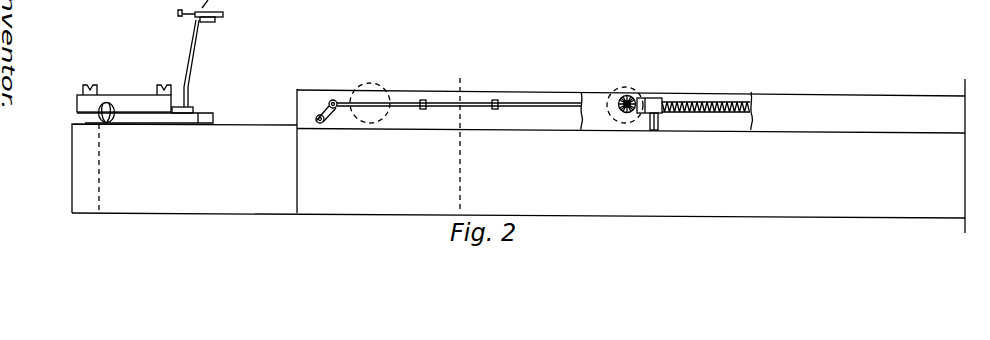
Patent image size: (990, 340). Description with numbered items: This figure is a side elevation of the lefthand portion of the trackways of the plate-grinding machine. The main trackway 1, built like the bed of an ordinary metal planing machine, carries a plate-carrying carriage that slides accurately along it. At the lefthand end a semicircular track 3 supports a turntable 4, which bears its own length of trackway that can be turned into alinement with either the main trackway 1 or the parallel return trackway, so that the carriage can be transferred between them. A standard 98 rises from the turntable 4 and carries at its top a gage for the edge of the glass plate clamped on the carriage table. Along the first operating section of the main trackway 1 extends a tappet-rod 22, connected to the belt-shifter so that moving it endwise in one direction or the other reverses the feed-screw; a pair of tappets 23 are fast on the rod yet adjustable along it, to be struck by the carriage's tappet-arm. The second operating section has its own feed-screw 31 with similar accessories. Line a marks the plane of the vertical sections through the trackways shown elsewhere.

The main trackway 1 is at (390, 202).
The semicircular track 3 is at (227, 125).
The turntable 4 is at (105, 97).
The standard 98 is at (190, 70).
The tappet-rod 22 is at (509, 104).
The tappets 23 is at (495, 109).
The feed-screw 31 is at (690, 105).
The line a is at (455, 134).